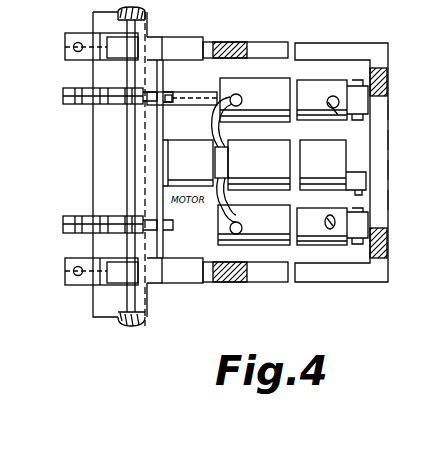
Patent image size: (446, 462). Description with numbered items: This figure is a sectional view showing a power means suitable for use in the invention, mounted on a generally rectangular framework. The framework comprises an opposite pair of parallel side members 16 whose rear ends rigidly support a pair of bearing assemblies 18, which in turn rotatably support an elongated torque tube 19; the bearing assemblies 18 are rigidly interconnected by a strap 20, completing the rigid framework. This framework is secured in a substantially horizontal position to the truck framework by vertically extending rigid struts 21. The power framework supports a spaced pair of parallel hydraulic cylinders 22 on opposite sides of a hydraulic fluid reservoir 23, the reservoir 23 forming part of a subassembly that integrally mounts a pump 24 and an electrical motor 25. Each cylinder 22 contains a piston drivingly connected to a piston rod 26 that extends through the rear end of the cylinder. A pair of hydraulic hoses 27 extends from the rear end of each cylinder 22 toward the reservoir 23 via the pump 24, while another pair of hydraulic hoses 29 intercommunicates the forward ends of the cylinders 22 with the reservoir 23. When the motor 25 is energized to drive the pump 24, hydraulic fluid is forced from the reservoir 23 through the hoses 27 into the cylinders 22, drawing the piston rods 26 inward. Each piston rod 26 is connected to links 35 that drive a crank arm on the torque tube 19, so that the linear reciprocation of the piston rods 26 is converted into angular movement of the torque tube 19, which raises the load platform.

The side members 16 is at (330, 45).
The bearing assemblies 18 is at (77, 33).
The torque tube 19 is at (108, 312).
The strap 20 is at (165, 65).
The struts 21 is at (382, 82).
The hydraulic cylinders 22 is at (254, 161).
The hydraulic fluid reservoir 23 is at (297, 167).
The pump 24 is at (219, 145).
The electrical motor 25 is at (348, 218).
The piston rod 26 is at (203, 92).
The hydraulic hoses 27 is at (212, 110).
The hydraulic hoses 29 is at (332, 100).
The links 35 is at (117, 106).